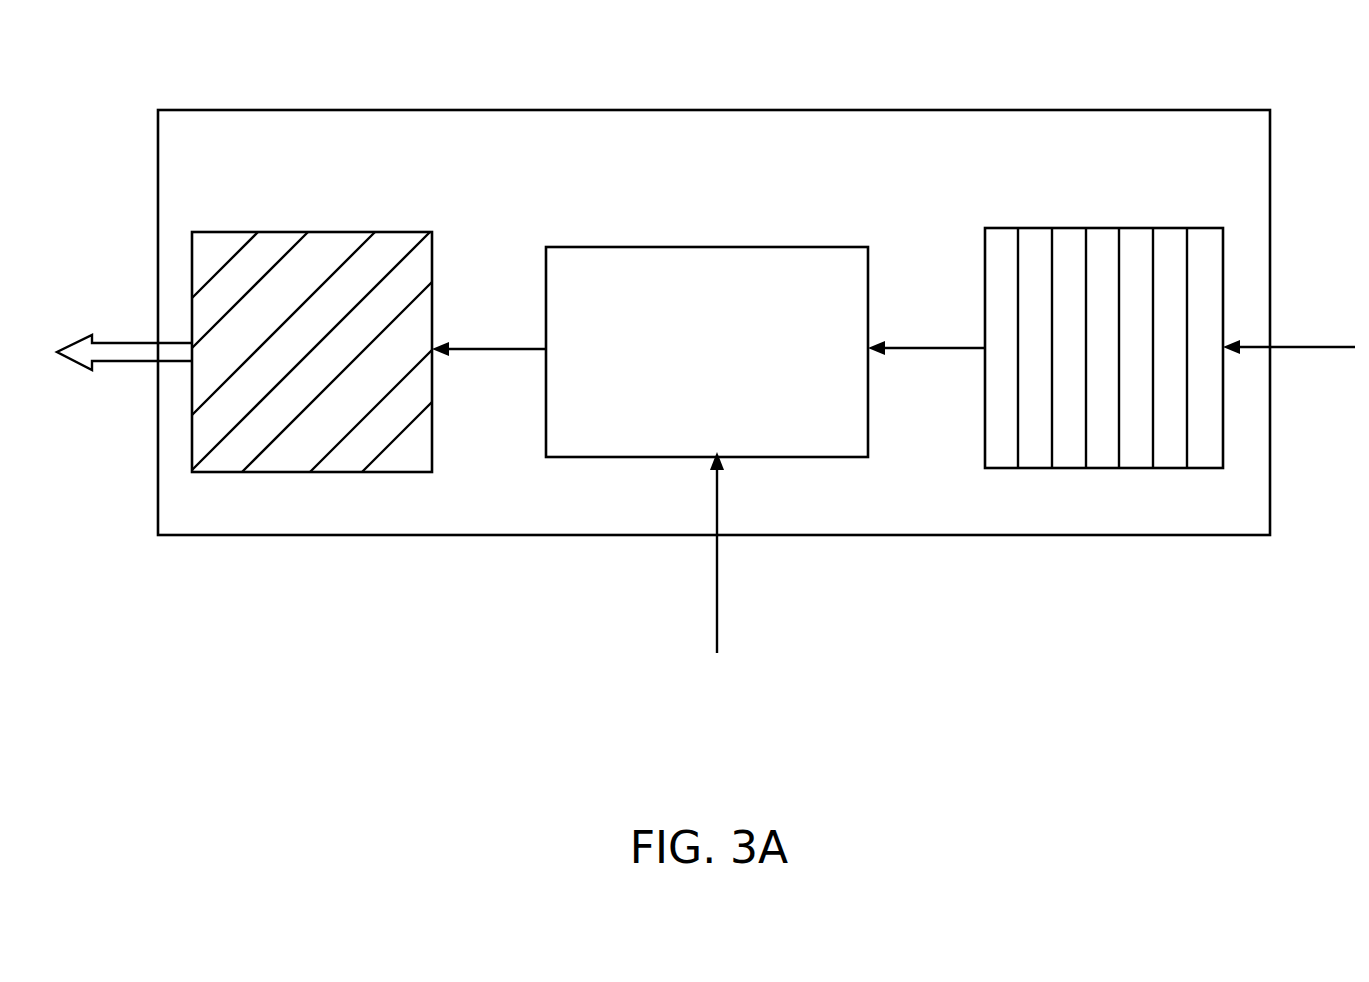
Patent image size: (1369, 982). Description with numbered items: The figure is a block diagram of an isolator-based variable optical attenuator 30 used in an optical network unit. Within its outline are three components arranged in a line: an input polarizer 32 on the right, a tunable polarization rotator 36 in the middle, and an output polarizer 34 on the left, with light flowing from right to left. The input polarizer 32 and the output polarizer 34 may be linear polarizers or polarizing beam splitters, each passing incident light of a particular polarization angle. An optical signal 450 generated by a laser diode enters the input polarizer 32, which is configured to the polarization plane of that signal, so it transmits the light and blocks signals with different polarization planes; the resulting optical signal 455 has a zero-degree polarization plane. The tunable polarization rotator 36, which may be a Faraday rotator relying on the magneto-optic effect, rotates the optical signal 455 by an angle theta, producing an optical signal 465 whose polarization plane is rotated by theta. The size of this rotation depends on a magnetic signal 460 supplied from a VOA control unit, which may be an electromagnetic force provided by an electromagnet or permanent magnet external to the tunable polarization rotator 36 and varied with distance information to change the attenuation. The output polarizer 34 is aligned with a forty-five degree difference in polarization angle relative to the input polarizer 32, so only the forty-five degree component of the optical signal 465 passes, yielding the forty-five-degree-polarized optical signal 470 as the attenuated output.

The isolator-based variable optical attenuator 30 is at (892, 110).
The input polarizer 32 is at (1095, 227).
The output polarizer 34 is at (302, 232).
The tunable polarization rotator 36 is at (690, 246).
The optical signal 450 is at (1326, 346).
The optical signal 455 is at (926, 347).
The magnetic signal 460 is at (715, 590).
The optical signal 465 is at (488, 348).
The optical signal 470 is at (87, 337).